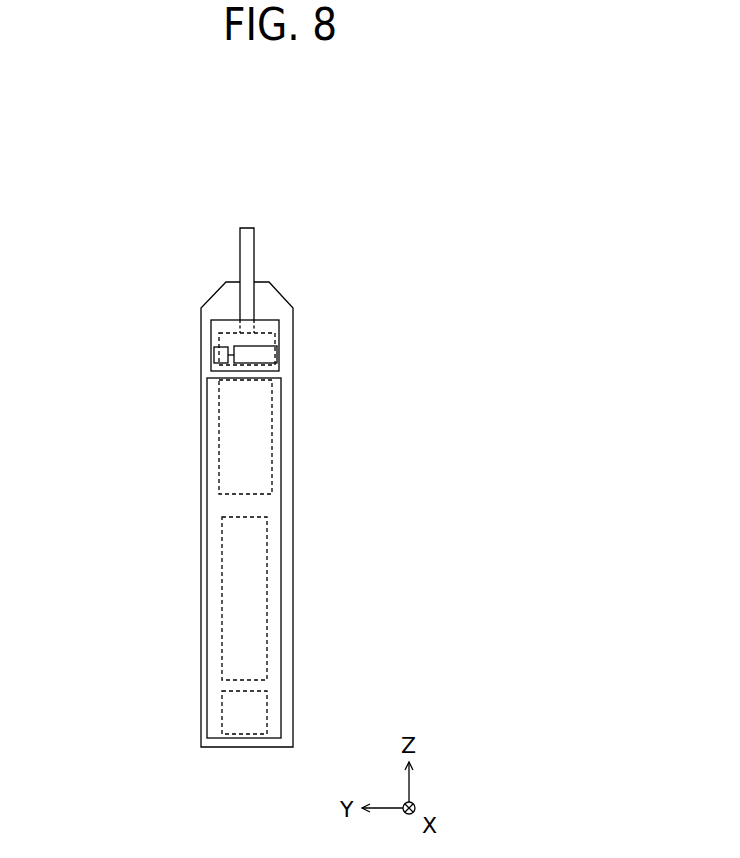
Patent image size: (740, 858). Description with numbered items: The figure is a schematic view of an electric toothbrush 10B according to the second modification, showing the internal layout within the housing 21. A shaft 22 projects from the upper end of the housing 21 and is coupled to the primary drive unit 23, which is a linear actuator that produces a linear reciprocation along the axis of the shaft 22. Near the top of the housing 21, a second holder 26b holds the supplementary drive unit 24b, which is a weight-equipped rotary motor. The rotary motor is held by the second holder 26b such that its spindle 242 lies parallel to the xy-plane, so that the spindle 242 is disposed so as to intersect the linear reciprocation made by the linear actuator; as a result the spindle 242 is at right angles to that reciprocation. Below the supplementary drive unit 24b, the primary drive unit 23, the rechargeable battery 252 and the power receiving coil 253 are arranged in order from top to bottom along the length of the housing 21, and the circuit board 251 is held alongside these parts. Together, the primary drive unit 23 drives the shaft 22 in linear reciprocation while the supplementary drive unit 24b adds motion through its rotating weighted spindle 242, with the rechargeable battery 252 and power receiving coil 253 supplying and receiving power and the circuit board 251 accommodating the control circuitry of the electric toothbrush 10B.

The electric toothbrush 10B is at (421, 195).
The housing 21 is at (294, 572).
The shaft 22 is at (248, 267).
The primary drive unit 23 is at (263, 444).
The supplementary drive unit 24b is at (263, 357).
The second holder 26b is at (277, 327).
The spindle 242 is at (227, 355).
The circuit board 251 is at (207, 607).
The rechargeable battery 252 is at (257, 647).
The power receiving coil 253 is at (256, 715).